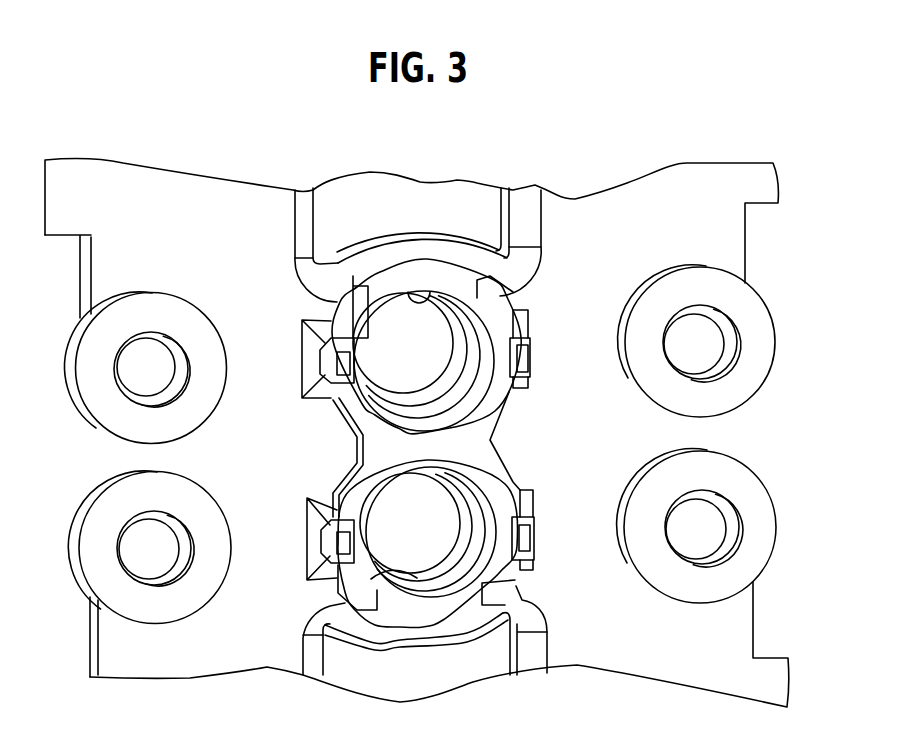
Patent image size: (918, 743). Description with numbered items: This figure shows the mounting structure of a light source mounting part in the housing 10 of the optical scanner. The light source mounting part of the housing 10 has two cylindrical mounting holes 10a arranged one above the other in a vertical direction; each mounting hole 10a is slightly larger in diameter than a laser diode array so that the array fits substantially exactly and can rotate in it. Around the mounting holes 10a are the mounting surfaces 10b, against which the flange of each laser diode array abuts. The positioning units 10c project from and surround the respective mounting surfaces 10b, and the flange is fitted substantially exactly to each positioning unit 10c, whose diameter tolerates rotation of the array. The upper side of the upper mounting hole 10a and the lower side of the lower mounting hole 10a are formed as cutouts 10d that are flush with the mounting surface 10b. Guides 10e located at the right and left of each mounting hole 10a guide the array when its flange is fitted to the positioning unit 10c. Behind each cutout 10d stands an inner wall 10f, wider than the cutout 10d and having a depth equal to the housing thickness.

The housing 10 is at (647, 233).
The mounting hole 10a is at (430, 292).
The mounting surface 10b is at (390, 474).
The positioning unit 10c is at (352, 307).
The cutout 10d is at (393, 271).
The guide 10e is at (347, 366).
The inner wall 10f is at (426, 210).